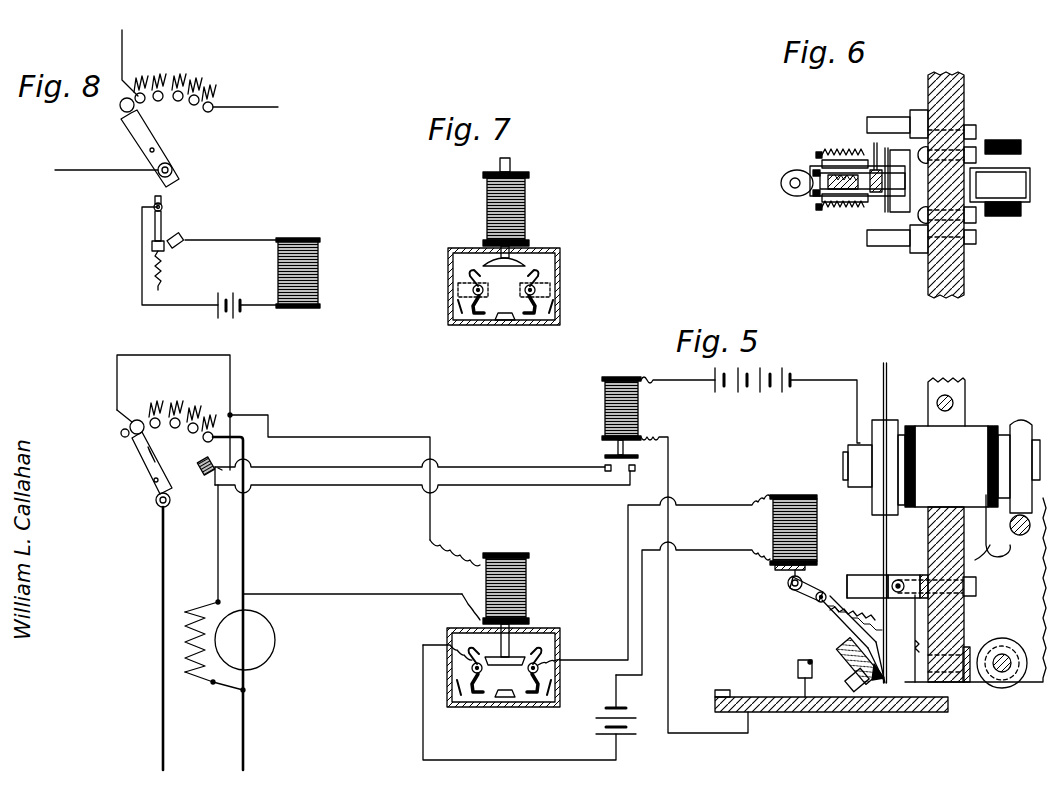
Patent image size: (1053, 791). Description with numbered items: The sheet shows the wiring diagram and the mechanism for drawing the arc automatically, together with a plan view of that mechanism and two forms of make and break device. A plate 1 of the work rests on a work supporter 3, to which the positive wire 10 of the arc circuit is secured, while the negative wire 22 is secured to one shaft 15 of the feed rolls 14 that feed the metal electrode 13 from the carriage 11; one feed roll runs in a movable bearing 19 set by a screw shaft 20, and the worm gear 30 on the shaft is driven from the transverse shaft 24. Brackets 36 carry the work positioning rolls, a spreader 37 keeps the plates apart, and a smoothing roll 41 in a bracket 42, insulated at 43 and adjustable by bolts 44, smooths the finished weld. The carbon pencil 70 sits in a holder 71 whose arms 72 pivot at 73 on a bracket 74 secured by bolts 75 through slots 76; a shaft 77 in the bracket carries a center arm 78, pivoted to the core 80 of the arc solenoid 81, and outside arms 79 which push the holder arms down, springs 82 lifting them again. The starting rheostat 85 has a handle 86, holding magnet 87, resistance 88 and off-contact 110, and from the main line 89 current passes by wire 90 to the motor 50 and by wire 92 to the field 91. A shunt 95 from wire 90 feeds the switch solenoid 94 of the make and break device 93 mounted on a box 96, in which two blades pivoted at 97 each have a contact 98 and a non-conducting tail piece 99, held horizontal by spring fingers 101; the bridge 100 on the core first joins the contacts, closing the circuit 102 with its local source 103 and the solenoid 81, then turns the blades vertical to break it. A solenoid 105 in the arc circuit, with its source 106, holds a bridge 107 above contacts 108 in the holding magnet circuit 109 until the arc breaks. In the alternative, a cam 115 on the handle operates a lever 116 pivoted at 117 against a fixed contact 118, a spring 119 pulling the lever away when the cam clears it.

In FIG. 5, the flat plate 1 is at (735, 695).
In FIG. 5, the work supporter 3 is at (936, 714).
In FIG. 5, the positive wire 10 is at (670, 452).
In FIG. 6, the carriage 11 is at (955, 285).
In FIG. 5, the carriage 11 is at (936, 523).
In FIG. 6, the metal electrode 13 is at (887, 212).
In FIG. 5, the metal electrode 13 is at (889, 380).
In FIG. 5, the feed roll 14 is at (892, 428).
In FIG. 5, the shaft 15 is at (846, 468).
In FIG. 5, the movable bearing 19 is at (954, 466).
In FIG. 5, the screw shaft 20 is at (952, 397).
In FIG. 5, the negative wire 22 is at (825, 401).
In FIG. 5, the transverse shaft 24 is at (975, 588).
In FIG. 5, the worm gear 30 is at (1022, 430).
In FIG. 6, the bracket 36 is at (915, 118).
In FIG. 5, the spreader 37 is at (803, 692).
In FIG. 6, the smoothing roll 41 is at (1000, 185).
In FIG. 5, the smoothing roll 41 is at (1005, 690).
In FIG. 5, the bracket 42 is at (969, 638).
In FIG. 6, the insulation 43 is at (1010, 140).
In FIG. 6, the bolt 44 is at (972, 125).
In FIG. 5, the bolt 44 is at (948, 670).
In FIG. 5, the motor 50 is at (245, 640).
In FIG. 6, the carbon pencil 70 is at (875, 190).
In FIG. 5, the carbon pencil 70 is at (871, 684).
In FIG. 6, the holder 71 is at (843, 178).
In FIG. 5, the holder 71 is at (856, 672).
In FIG. 6, the holder arm 72 is at (895, 172).
In FIG. 5, the holder arm 72 is at (878, 640).
In FIG. 6, the pivot 73 is at (905, 140).
In FIG. 5, the pivot 73 is at (900, 580).
In FIG. 6, the bracket 74 is at (800, 190).
In FIG. 5, the bracket 74 is at (867, 587).
In FIG. 6, the bolt 75 is at (978, 155).
In FIG. 5, the bolt 75 is at (978, 585).
In FIG. 5, the slot 76 is at (989, 562).
In FIG. 6, the shaft 77 is at (815, 195).
In FIG. 5, the shaft 77 is at (823, 592).
In FIG. 6, the center arm 78 is at (780, 183).
In FIG. 5, the center arm 78 is at (800, 590).
In FIG. 6, the outside arm 79 is at (858, 160).
In FIG. 5, the outside arm 79 is at (850, 600).
In FIG. 5, the core 80 is at (788, 582).
In FIG. 8, the arc solenoid 81 is at (320, 265).
In FIG. 5, the arc solenoid 81 is at (773, 527).
In FIG. 6, the spring 82 is at (825, 152).
In FIG. 5, the spring 82 is at (835, 617).
In FIG. 8, the starting rheostat 85 is at (175, 71).
In FIG. 5, the starting rheostat 85 is at (182, 401).
In FIG. 8, the handle 86 is at (136, 141).
In FIG. 5, the handle 86 is at (150, 463).
In FIG. 5, the holding magnet 87 is at (203, 466).
In FIG. 8, the resistance 88 is at (200, 66).
In FIG. 5, the resistance 88 is at (190, 410).
In FIG. 8, the main line 89 is at (101, 183).
In FIG. 5, the main line 89 is at (162, 571).
In FIG. 5, the wire 90 is at (246, 522).
In FIG. 5, the field 91 is at (213, 636).
In FIG. 5, the wire 92 is at (217, 541).
In FIG. 7, the make and break device 93 is at (503, 330).
In FIG. 5, the make and break device 93 is at (503, 708).
In FIG. 7, the switch solenoid 94 is at (487, 208).
In FIG. 5, the switch solenoid 94 is at (486, 573).
In FIG. 5, the shunt 95 is at (345, 506).
In FIG. 7, the box 96 is at (548, 248).
In FIG. 5, the box 96 is at (546, 630).
In FIG. 7, the pivot 97 is at (472, 290).
In FIG. 5, the pivot 97 is at (470, 667).
In FIG. 7, the contact 98 is at (470, 283).
In FIG. 5, the contact 98 is at (470, 660).
In FIG. 7, the tail piece 99 is at (475, 316).
In FIG. 5, the tail piece 99 is at (472, 694).
In FIG. 7, the bridge 100 is at (482, 260).
In FIG. 5, the bridge 100 is at (507, 666).
In FIG. 7, the spring finger 101 is at (448, 306).
In FIG. 5, the spring finger 101 is at (448, 690).
In FIG. 8, the circuit 102 is at (174, 315).
In FIG. 5, the circuit 102 is at (641, 606).
In FIG. 8, the local source of electrical energy 103 is at (240, 311).
In FIG. 5, the local source of electrical energy 103 is at (622, 736).
In FIG. 5, the solenoid 105 is at (605, 411).
In FIG. 5, the local source of electrical energy 106 is at (752, 390).
In FIG. 5, the bridge 107 is at (616, 451).
In FIG. 5, the contact 108 is at (632, 473).
In FIG. 5, the holding magnet circuit 109 is at (422, 468).
In FIG. 5, the off-contact 110 is at (121, 434).
In FIG. 8, the cam 115 is at (178, 185).
In FIG. 8, the lever 116 is at (155, 229).
In FIG. 8, the pivot 117 is at (170, 207).
In FIG. 8, the fixed contact 118 is at (177, 249).
In FIG. 8, the spring 119 is at (155, 271).